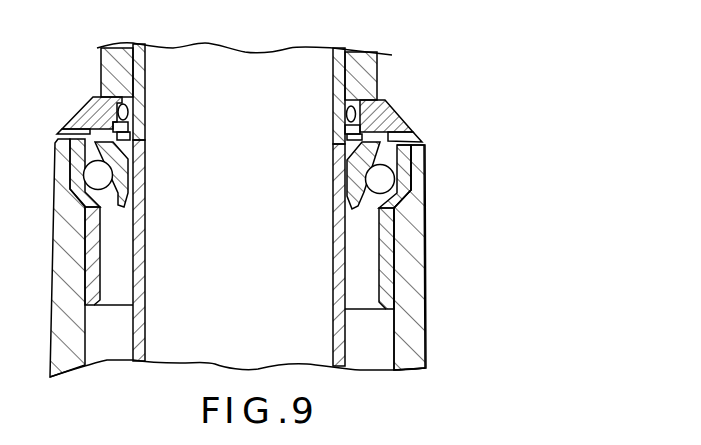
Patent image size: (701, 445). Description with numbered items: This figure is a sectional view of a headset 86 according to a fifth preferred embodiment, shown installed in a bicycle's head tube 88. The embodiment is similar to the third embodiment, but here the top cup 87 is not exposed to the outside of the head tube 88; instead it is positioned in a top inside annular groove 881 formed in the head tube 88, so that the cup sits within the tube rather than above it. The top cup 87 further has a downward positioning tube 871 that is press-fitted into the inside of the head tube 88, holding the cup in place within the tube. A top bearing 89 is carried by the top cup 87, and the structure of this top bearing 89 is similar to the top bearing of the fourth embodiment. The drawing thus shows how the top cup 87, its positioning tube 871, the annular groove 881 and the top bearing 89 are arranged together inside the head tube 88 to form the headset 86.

The headset 86 is at (468, 83).
The top cup 87 is at (405, 202).
The downward positioning tube 871 is at (388, 270).
The head tube 88 is at (418, 333).
The top inside annular groove 881 is at (381, 176).
The top bearing 89 is at (423, 141).